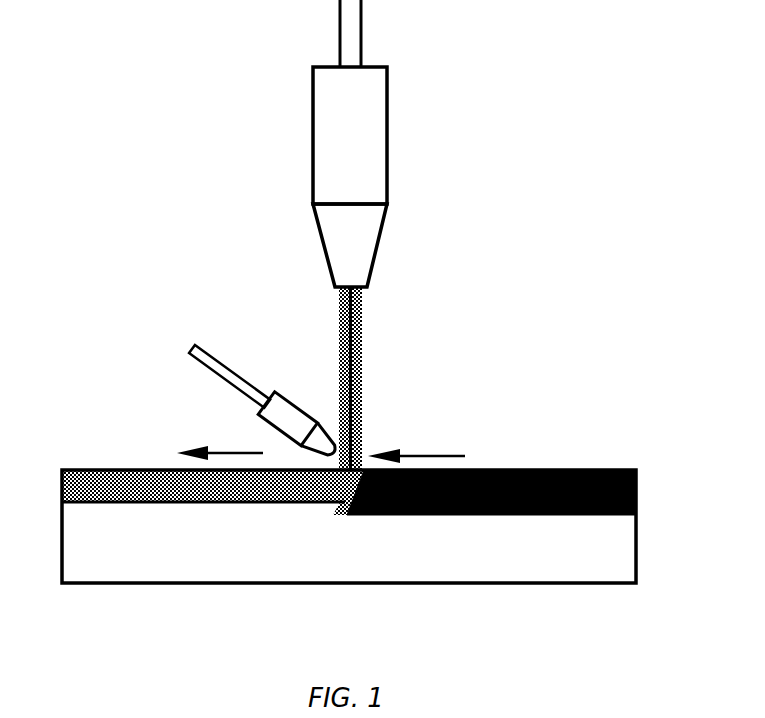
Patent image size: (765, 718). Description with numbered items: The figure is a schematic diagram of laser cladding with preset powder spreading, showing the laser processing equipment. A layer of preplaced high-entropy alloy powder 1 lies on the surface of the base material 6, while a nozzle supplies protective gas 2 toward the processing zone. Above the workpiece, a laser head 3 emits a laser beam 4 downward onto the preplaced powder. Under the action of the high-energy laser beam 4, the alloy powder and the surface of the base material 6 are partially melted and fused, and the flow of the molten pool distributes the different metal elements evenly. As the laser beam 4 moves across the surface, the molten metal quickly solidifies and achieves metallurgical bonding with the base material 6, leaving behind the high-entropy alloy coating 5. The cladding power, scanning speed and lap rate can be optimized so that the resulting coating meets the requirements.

The preplaced high-entropy alloy powder 1 is at (213, 459).
The protective gas 2 is at (193, 352).
The laser head 3 is at (365, 183).
The laser beam 4 is at (362, 375).
The high-entropy alloy coating 5 is at (502, 470).
The base material 6 is at (349, 547).